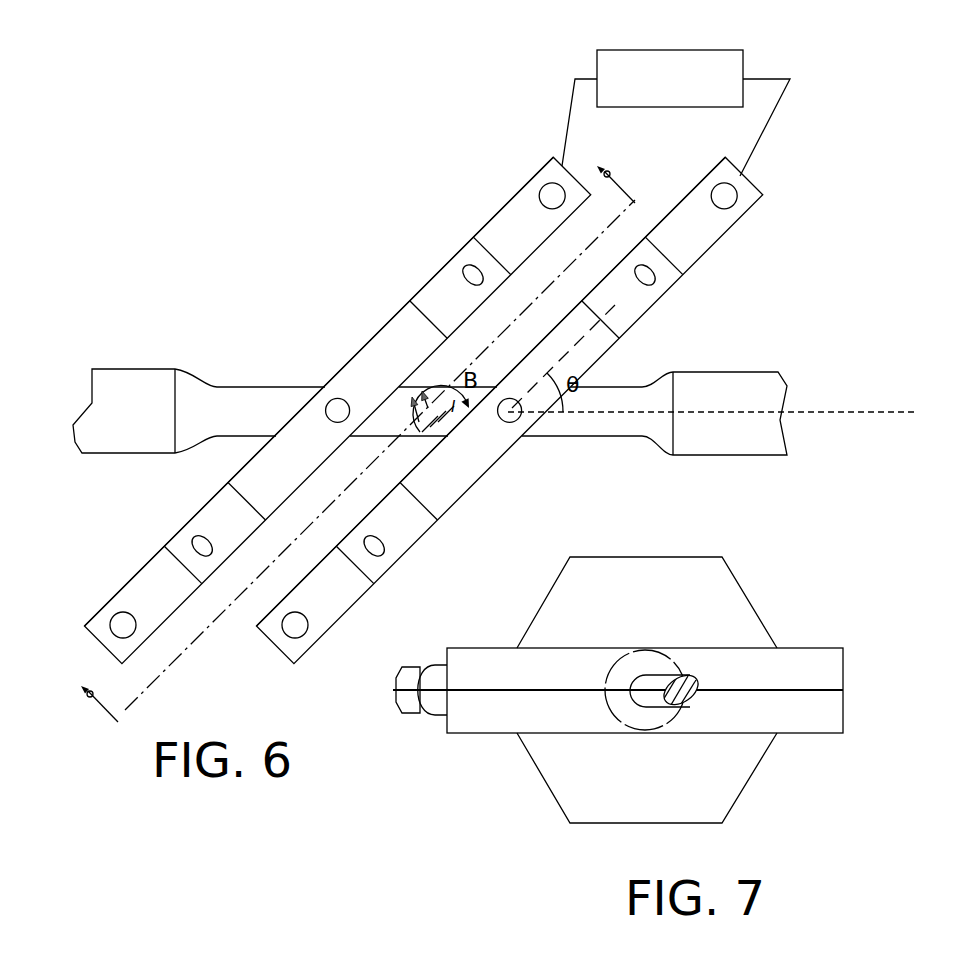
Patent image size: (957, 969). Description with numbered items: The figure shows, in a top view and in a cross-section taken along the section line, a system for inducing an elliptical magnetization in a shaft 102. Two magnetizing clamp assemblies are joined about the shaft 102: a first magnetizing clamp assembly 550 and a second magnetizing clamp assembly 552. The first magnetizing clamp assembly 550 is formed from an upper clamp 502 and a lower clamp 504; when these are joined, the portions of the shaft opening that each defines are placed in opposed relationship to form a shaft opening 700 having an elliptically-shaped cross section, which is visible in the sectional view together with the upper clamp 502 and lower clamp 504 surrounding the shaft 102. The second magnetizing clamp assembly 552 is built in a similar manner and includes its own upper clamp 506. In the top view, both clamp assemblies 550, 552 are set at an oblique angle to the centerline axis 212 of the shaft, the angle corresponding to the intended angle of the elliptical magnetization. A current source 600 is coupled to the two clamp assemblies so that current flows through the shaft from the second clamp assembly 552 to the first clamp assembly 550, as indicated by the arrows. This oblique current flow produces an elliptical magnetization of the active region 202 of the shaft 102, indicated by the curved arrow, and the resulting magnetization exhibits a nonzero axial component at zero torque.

In FIG. 6, the current source 600 is at (672, 50).
In FIG. 6, the shaft 102 is at (173, 368).
In FIG. 7, the shaft 102 is at (439, 665).
In FIG. 6, the centerline axis 212 is at (852, 410).
In FIG. 6, the upper clamp 502 is at (477, 226).
In FIG. 7, the upper clamp 502 is at (668, 578).
In FIG. 6, the first magnetizing clamp assembly 550 is at (380, 298).
In FIG. 6, the upper clamp 506 is at (736, 227).
In FIG. 6, the second magnetizing clamp assembly 552 is at (686, 298).
In FIG. 6, the active region 202 is at (378, 443).
In FIG. 7, the active region 202 is at (705, 680).
In FIG. 7, the lower clamp 504 is at (733, 737).
In FIG. 7, the shaft opening 700 is at (620, 688).